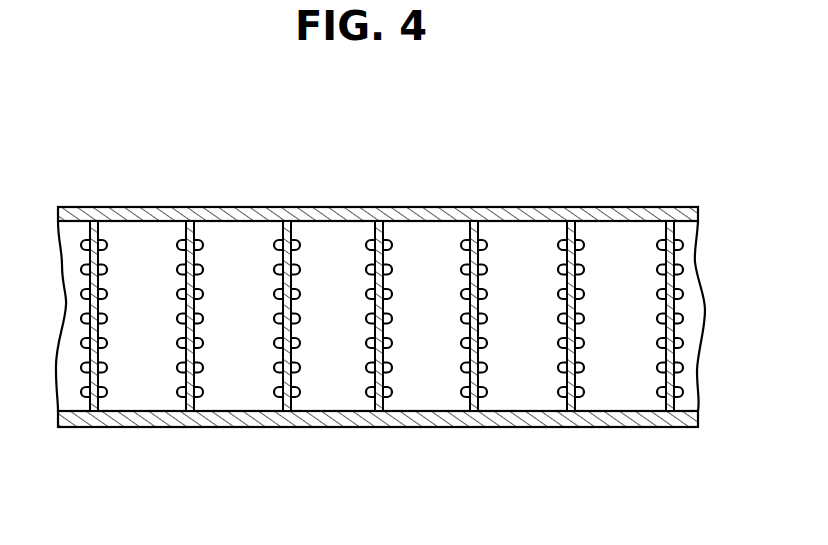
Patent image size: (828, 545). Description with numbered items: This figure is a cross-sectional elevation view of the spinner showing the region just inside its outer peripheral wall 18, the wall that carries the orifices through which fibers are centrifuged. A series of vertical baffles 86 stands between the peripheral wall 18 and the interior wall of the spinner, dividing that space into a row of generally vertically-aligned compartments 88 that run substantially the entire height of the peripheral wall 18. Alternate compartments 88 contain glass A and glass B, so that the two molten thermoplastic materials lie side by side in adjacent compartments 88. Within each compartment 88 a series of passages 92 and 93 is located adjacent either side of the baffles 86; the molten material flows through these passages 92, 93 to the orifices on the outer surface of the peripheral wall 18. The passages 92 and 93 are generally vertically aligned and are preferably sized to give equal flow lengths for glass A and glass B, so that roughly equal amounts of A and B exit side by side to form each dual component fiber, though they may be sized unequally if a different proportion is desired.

The outer peripheral wall 18 is at (227, 334).
The vertical baffles 86 is at (329, 232).
The compartments 88 is at (123, 255).
The passages 92 is at (186, 245).
The passages 93 is at (196, 245).
The glass A is at (155, 263).
The glass B is at (237, 250).